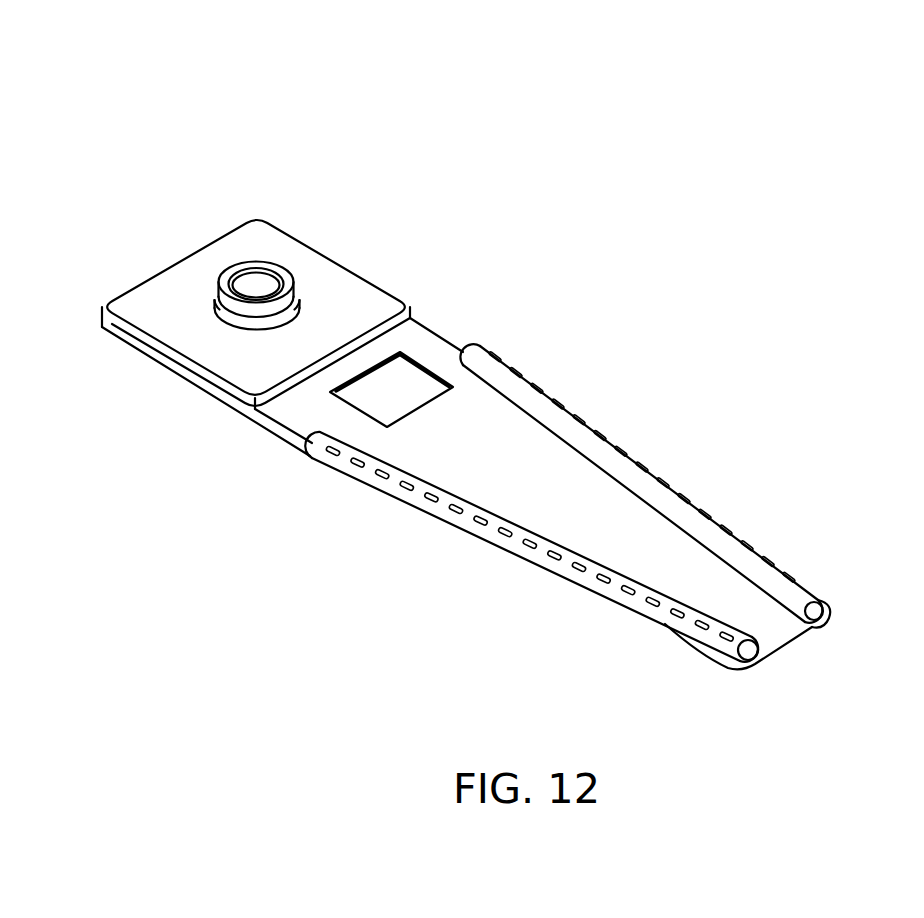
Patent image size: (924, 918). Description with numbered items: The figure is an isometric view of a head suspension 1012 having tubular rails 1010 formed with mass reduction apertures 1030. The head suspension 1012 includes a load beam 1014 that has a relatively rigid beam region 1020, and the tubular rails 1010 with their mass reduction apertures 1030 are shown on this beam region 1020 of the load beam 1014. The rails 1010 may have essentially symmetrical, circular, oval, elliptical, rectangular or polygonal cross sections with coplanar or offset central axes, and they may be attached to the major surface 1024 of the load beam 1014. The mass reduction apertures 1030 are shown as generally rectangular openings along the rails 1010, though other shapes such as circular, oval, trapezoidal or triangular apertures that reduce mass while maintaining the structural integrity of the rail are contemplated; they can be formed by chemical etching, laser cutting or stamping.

The head suspension 1012 is at (612, 222).
The load beam 1014 is at (462, 417).
The tubular rails 1010 is at (550, 397).
The major surface 1024 is at (558, 467).
The mass reduction apertures 1030 is at (688, 503).
The beam region 1020 is at (608, 550).